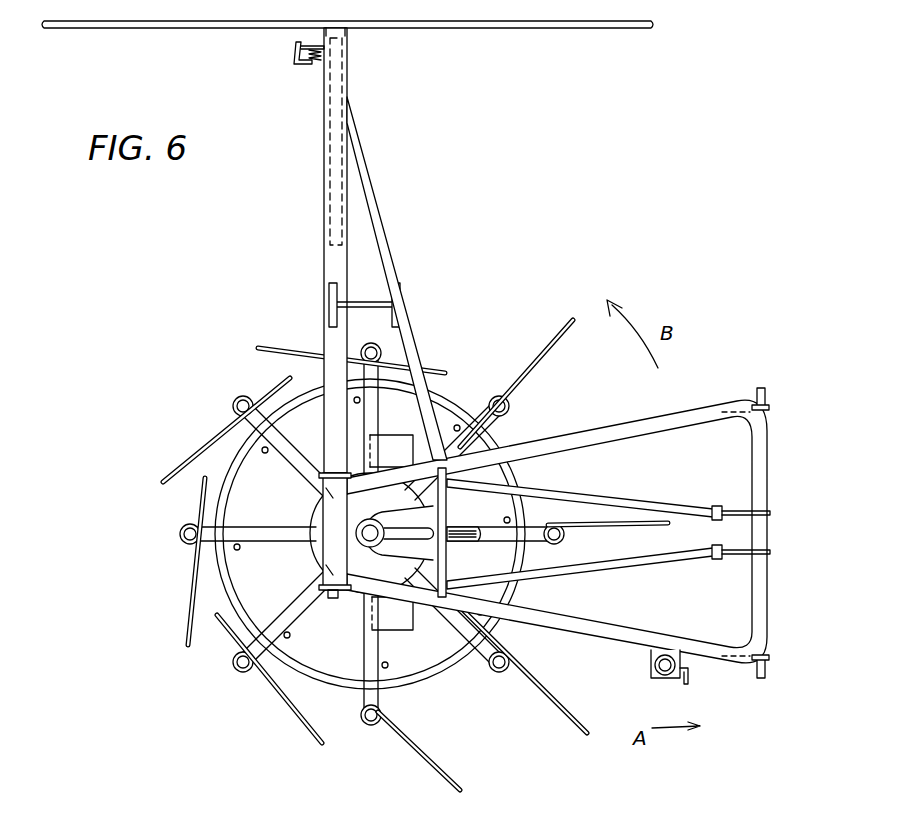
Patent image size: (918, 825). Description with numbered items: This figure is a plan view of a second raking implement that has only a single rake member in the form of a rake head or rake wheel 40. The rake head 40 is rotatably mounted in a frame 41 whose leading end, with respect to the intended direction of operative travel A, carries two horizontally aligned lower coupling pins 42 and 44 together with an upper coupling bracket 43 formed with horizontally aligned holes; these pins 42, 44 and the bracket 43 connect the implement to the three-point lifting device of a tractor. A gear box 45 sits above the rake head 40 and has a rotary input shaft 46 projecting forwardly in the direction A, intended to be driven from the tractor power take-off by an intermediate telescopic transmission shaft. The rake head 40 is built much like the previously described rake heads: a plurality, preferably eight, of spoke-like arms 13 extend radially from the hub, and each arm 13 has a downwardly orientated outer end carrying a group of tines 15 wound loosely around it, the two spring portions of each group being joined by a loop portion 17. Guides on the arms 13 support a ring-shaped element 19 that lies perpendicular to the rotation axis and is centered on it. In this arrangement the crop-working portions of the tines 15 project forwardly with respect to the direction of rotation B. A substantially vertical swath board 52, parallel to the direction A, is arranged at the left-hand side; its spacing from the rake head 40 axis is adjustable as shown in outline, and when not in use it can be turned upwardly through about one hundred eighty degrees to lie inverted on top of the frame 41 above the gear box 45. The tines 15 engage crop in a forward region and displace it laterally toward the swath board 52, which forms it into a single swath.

The spoke-like arms 13 is at (289, 528).
The tines 15 is at (190, 604).
The loop portion 17 is at (201, 491).
The ring-shaped element 19 is at (434, 673).
The rake head 40 is at (478, 386).
The frame 41 is at (623, 428).
The lower coupling pin 42 is at (756, 396).
The upper coupling bracket 43 is at (712, 551).
The lower coupling pin 44 is at (753, 670).
The gear box 45 is at (313, 549).
The rotary input shaft 46 is at (458, 544).
The swath board 52 is at (428, 30).